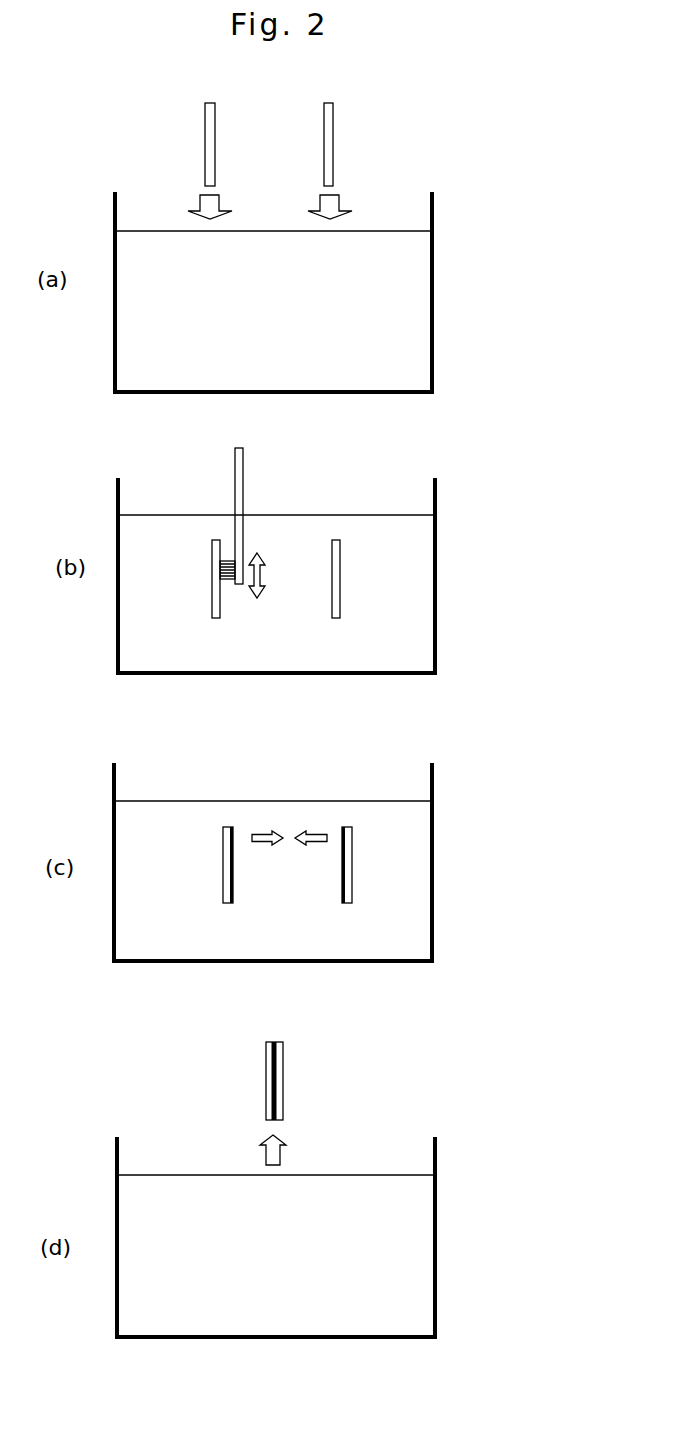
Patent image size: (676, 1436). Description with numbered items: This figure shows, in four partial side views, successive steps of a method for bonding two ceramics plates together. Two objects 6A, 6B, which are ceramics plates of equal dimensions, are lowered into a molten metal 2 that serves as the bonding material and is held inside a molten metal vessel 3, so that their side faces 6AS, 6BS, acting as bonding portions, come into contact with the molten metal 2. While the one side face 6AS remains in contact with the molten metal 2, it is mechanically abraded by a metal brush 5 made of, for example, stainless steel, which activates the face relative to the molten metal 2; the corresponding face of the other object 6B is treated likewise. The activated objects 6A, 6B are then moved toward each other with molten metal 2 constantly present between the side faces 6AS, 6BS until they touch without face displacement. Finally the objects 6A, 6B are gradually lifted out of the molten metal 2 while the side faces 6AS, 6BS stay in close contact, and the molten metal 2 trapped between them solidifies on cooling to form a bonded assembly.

The molten metal 2 is at (400, 292).
The molten metal vessel 3 is at (434, 360).
The metal brush 5 is at (243, 478).
The object 6A is at (215, 133).
The object 6B is at (333, 135).
The side face 6AS is at (220, 603).
The side face 6BS is at (332, 603).